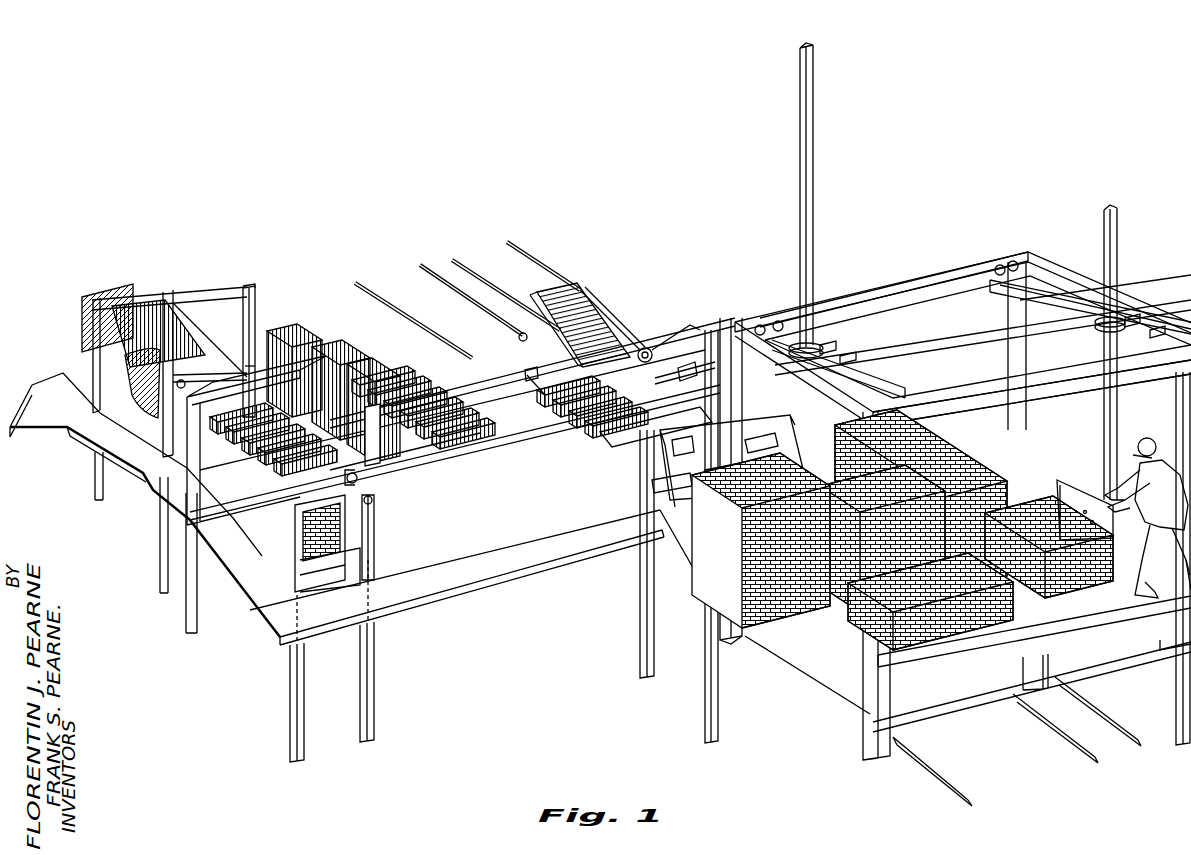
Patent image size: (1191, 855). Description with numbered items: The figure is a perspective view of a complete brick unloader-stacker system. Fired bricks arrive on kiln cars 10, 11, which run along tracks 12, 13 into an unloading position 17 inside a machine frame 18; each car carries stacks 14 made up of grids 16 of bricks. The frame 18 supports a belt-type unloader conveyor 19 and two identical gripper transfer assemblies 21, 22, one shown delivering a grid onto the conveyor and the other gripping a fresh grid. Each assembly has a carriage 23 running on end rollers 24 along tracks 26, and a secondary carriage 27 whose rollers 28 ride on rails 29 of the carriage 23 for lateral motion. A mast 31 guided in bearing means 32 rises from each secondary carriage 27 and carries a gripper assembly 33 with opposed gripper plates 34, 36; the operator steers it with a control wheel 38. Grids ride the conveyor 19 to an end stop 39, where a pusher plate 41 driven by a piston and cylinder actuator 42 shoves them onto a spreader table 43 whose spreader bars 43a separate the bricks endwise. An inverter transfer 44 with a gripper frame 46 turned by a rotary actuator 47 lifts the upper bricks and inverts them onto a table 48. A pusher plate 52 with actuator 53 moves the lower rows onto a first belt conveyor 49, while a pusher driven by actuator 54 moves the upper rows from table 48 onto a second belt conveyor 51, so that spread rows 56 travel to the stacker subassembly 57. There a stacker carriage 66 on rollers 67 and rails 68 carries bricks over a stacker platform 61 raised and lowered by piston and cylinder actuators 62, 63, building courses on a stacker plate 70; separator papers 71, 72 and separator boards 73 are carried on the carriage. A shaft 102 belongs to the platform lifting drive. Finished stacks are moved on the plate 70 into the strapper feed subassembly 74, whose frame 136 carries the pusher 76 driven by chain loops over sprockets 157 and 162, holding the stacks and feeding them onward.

The kiln car 10 is at (972, 708).
The kiln car 11 is at (1115, 658).
The track 12 is at (968, 798).
The track 13 is at (1135, 718).
The stack 14 is at (1000, 435).
The grid 16 is at (1065, 588).
The unloading position 17 is at (796, 697).
The machine frame 18 is at (863, 722).
The unloader conveyor 19 is at (960, 355).
The gripper transfer assembly 21 is at (860, 352).
The gripper transfer assembly 22 is at (1052, 282).
The carriage 23 is at (1000, 330).
The end rollers 24 is at (1013, 261).
The tracks 26 is at (925, 290).
The secondary carriage 27 is at (1150, 292).
The rollers 28 is at (858, 358).
The rails 29 is at (1032, 393).
The mast 31 is at (815, 182).
The bearing means 32 is at (822, 346).
The gripper assembly 33 is at (770, 386).
The gripper plate 34 is at (870, 475).
The gripper plate 36 is at (790, 436).
The control wheel 38 is at (876, 461).
The end stop 39 is at (672, 490).
The pusher plate 41 is at (705, 512).
The piston and cylinder actuator 42 is at (833, 507).
The spreader table 43 is at (688, 366).
The spreader bars 43a is at (628, 445).
The inverter transfer 44 is at (616, 297).
The gripper frame 46 is at (572, 288).
The rotary actuator 47 is at (690, 322).
The table 48 is at (515, 338).
The first belt conveyor 49 is at (475, 558).
The second belt conveyor 51 is at (468, 363).
The pusher plate 52 is at (530, 377).
The actuator 53 is at (685, 366).
The actuator 54 is at (648, 346).
The spread rows 56 is at (380, 372).
The stacker subassembly 57 is at (263, 360).
The stacker platform 61 is at (325, 590).
The piston and cylinder actuator 62 is at (304, 680).
The piston and cylinder actuator 63 is at (376, 682).
The stacker carriage 66 is at (360, 486).
The rollers 67 is at (400, 478).
The rails 68 is at (455, 478).
The stacker plate 70 is at (376, 552).
The stack of separator papers 71 is at (305, 345).
The stack of separator papers 72 is at (360, 372).
The stack of separator boards 73 is at (332, 353).
The strapper feed subassembly 74 is at (266, 291).
The pusher 76 is at (165, 433).
The shaft 102 is at (244, 470).
The frame 136 is at (90, 368).
The sprocket 157 is at (190, 297).
The sprocket 162 is at (240, 290).